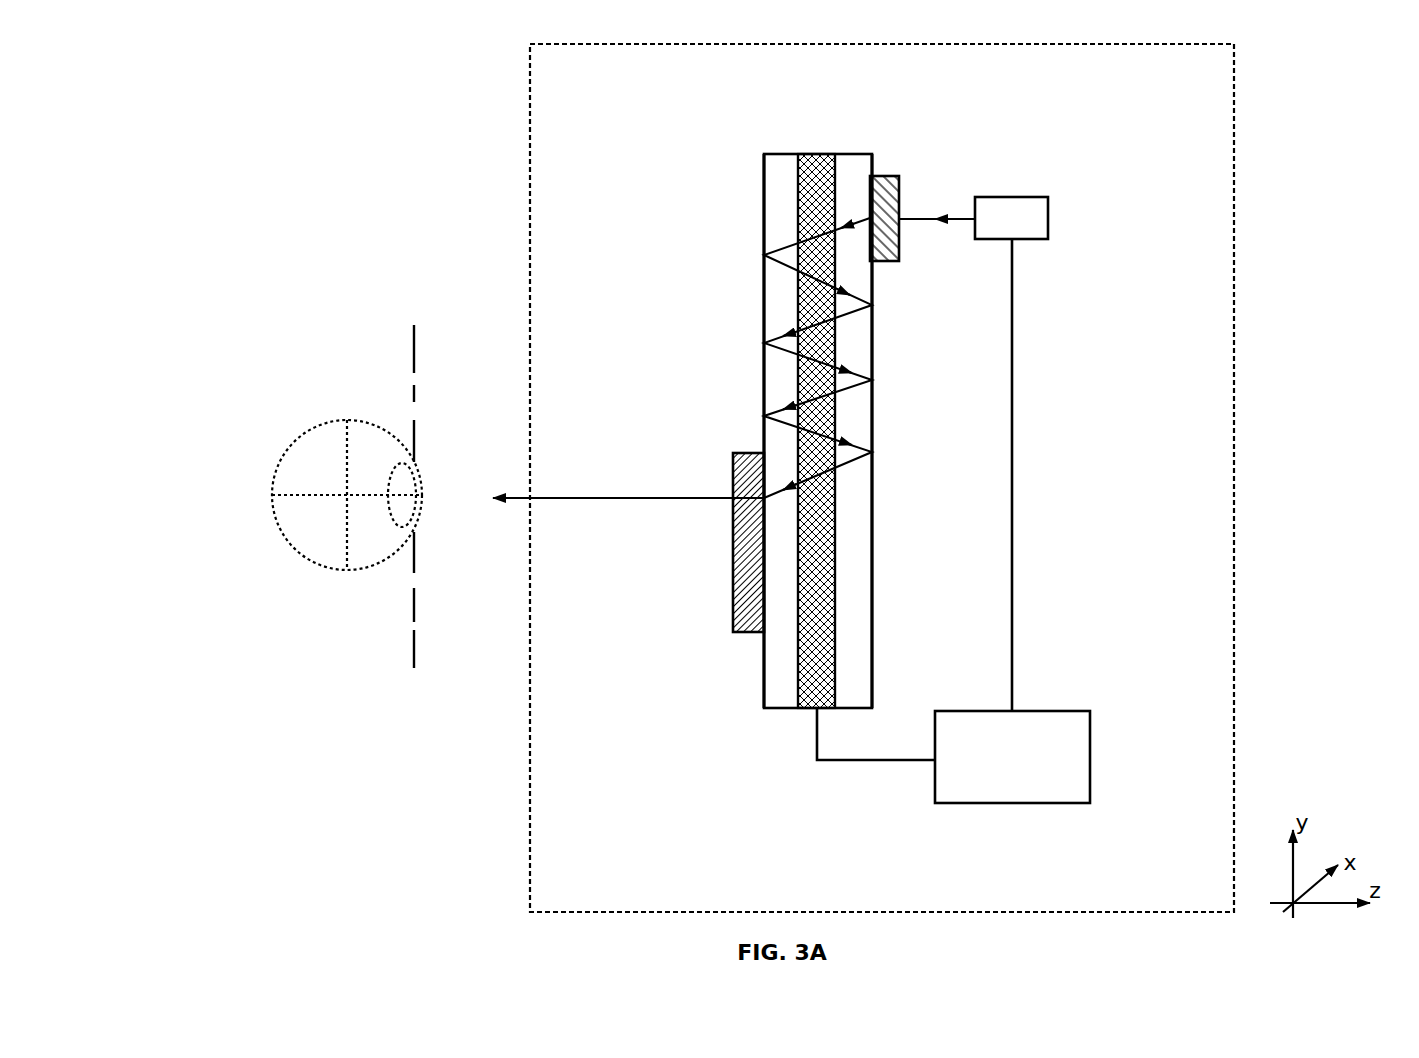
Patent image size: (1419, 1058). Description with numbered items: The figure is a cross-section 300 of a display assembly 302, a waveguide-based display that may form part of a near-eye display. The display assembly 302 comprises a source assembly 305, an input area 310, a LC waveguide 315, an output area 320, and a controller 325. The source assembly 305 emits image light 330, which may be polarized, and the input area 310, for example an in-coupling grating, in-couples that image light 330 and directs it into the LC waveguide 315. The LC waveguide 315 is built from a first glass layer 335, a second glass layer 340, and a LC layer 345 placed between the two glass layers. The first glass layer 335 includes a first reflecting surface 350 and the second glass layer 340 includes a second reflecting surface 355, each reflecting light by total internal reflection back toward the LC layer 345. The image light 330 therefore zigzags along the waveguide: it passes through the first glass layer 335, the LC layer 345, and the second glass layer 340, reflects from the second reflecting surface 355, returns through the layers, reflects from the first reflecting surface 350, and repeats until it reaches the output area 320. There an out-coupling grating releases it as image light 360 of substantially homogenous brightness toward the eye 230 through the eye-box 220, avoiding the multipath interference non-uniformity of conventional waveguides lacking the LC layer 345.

The cross-section 300 is at (151, 76).
The display assembly 302 is at (1188, 72).
The source assembly 305 is at (1048, 219).
The input area 310 is at (884, 176).
The LC waveguide 315 is at (807, 153).
The output area 320 is at (732, 627).
The controller 325 is at (996, 784).
The image light 330 is at (953, 217).
The first glass layer 335 is at (857, 688).
The second glass layer 340 is at (780, 688).
The LC layer 345 is at (810, 187).
The first reflecting surface 350 is at (872, 414).
The second reflecting surface 355 is at (764, 382).
The image light 360 is at (560, 498).
The eye 230 is at (310, 432).
The eye-box 220 is at (412, 588).